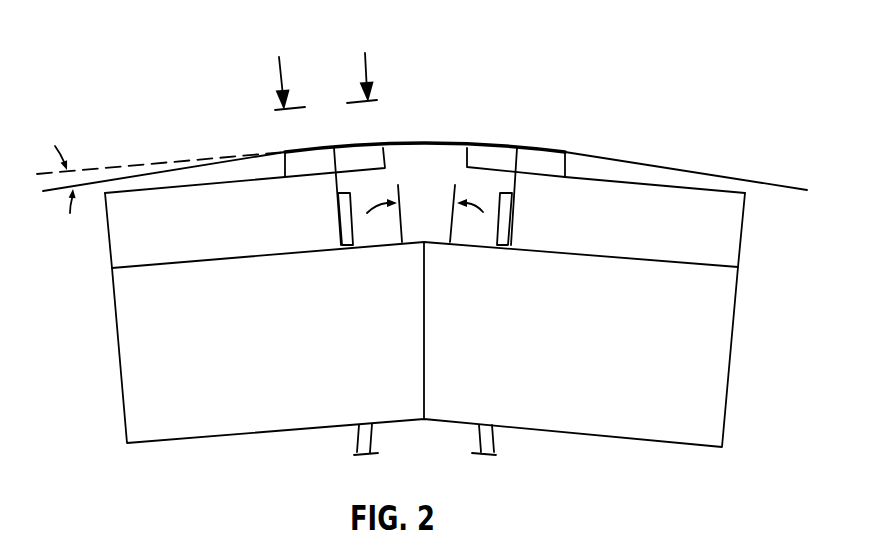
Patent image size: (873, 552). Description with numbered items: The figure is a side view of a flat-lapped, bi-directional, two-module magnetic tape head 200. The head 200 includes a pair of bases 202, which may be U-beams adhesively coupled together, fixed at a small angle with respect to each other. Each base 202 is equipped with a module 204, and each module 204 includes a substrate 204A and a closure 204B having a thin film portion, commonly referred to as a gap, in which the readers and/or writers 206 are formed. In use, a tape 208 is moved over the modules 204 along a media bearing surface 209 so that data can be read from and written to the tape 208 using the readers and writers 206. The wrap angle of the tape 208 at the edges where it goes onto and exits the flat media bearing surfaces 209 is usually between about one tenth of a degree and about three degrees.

The two-module magnetic tape head 200 is at (147, 101).
The base 202 is at (114, 335).
The module 204 is at (105, 237).
The substrate 204A is at (167, 215).
The closure 204B is at (465, 157).
The readers and/or writers 206 is at (342, 130).
The tape 208 is at (658, 167).
The media bearing surface 209 is at (284, 142).